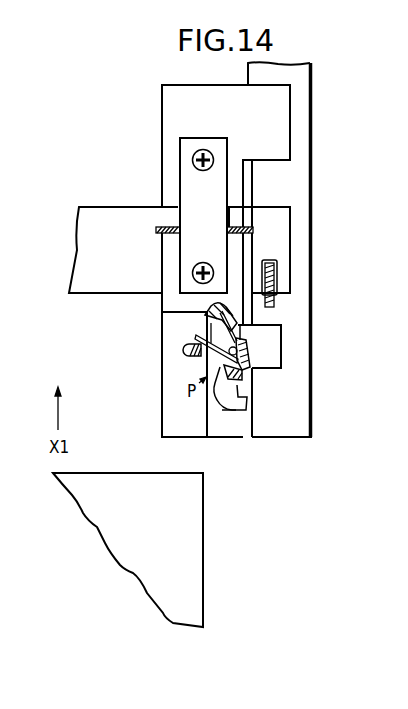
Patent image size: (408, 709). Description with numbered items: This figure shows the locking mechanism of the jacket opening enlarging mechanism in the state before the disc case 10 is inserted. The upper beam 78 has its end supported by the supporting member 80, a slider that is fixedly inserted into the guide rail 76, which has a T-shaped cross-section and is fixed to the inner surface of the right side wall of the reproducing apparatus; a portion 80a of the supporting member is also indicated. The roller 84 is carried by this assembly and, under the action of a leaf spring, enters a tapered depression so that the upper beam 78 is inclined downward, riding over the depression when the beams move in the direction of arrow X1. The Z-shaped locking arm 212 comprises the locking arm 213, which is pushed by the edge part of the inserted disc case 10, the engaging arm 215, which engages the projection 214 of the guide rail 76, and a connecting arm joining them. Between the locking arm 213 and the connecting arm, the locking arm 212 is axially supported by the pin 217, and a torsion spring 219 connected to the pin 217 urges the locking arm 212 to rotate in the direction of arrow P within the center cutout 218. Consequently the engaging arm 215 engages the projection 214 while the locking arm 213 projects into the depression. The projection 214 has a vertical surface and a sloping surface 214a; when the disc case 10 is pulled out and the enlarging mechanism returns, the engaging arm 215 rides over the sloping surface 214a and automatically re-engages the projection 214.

The disc case 10 is at (207, 519).
The guide rail 76 is at (305, 177).
The upper beam 78 is at (110, 207).
The supporting member 80 is at (161, 109).
The housing portion 80a is at (283, 117).
The roller 84 is at (276, 299).
The Z-shaped locking arm 212 is at (228, 408).
The locking arm 213 is at (183, 350).
The projection 214 is at (250, 385).
The sloping surface 214a is at (252, 373).
The engaging arm 215 is at (248, 400).
The pin 217 is at (240, 351).
The center cutout 218 is at (202, 357).
The torsion spring 219 is at (242, 331).